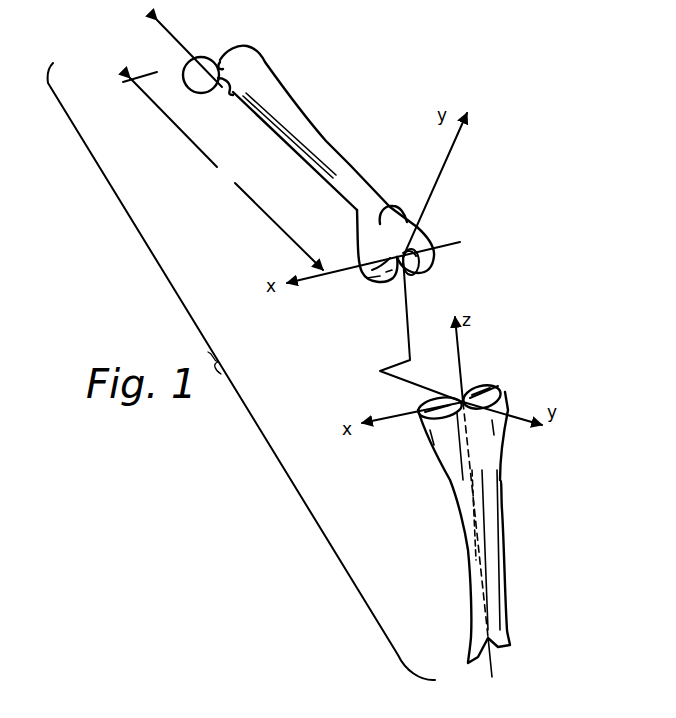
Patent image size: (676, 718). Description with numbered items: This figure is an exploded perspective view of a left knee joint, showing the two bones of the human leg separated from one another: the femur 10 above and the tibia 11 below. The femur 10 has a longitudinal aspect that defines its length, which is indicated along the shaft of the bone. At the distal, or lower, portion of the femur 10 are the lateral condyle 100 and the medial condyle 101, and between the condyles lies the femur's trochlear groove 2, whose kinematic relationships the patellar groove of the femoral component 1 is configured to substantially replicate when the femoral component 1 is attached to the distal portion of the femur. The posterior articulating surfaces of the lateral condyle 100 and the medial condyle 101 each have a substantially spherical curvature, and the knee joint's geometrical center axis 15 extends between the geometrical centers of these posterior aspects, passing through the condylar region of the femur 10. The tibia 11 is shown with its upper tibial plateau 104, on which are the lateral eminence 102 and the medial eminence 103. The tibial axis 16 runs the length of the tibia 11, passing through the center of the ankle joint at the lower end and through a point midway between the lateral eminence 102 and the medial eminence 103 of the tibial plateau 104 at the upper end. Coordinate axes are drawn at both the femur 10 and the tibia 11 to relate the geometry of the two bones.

The femoral component 1 is at (223, 171).
The femur 10 is at (323, 139).
The tibia 11 is at (500, 542).
The geometrical center axis 15 is at (438, 242).
The lateral condyle 100 is at (423, 262).
The trochlear groove 2 is at (422, 272).
The medial condyle 101 is at (393, 272).
The lateral eminence 102 is at (497, 385).
The medial eminence 103 is at (433, 423).
The tibial plateau 104 is at (481, 382).
The tibial axis 16 is at (477, 540).